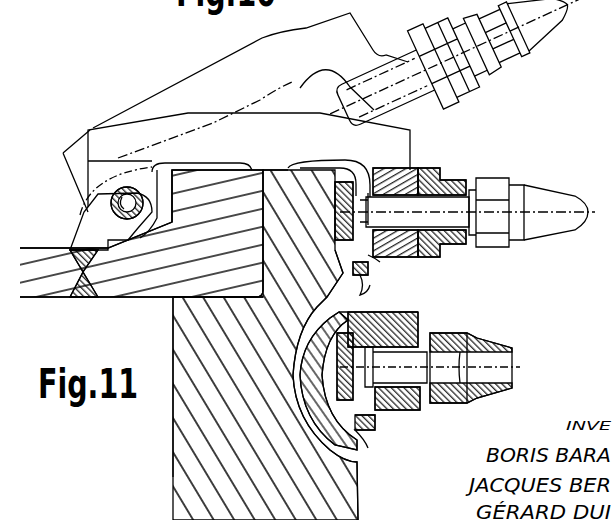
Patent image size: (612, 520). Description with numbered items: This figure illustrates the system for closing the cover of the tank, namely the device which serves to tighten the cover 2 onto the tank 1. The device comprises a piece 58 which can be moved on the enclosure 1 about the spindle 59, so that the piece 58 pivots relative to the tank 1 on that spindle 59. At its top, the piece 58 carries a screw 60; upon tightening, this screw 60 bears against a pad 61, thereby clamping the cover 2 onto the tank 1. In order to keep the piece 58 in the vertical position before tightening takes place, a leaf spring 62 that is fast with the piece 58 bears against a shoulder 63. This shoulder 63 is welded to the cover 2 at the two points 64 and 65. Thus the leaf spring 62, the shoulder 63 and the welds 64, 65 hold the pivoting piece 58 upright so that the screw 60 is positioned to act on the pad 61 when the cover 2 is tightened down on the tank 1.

The tank 1 is at (42, 262).
The cover 2 is at (255, 384).
The piece 58 is at (307, 123).
The spindle 59 is at (92, 200).
The screw 60 is at (448, 210).
The pad 61 is at (330, 177).
The leaf spring 62 is at (377, 273).
The shoulder 63 is at (352, 272).
The weld point 64 is at (366, 288).
The weld point 65 is at (380, 260).